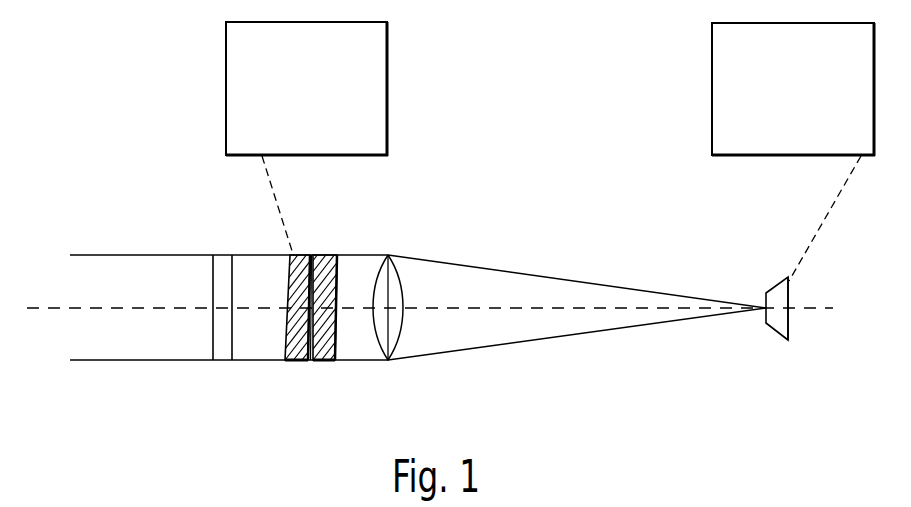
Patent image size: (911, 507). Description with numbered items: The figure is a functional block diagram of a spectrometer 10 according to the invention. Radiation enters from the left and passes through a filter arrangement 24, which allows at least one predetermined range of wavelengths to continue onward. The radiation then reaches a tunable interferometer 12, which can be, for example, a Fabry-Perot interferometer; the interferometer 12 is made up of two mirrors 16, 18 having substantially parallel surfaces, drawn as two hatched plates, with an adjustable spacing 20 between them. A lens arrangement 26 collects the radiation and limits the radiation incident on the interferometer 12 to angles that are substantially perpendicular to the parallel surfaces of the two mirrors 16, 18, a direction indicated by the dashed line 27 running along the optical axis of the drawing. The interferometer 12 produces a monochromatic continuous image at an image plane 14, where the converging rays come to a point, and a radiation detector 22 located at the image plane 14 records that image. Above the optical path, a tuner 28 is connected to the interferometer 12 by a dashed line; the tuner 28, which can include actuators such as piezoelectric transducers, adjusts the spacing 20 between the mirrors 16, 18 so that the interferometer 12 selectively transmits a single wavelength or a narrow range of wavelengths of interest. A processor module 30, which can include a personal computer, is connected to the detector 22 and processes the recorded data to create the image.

The spectrometer 10 is at (536, 218).
The tunable interferometer 12 is at (308, 294).
The image plane 14 is at (769, 345).
The mirror 16 is at (300, 361).
The mirror 18 is at (322, 361).
The adjustable spacing 20 is at (312, 240).
The radiation detector 22 is at (777, 257).
The filter arrangement 24 is at (222, 380).
The lens arrangement 26 is at (388, 377).
The dashed line 27 is at (52, 306).
The tuner 28 is at (388, 38).
The processor module 30 is at (712, 53).